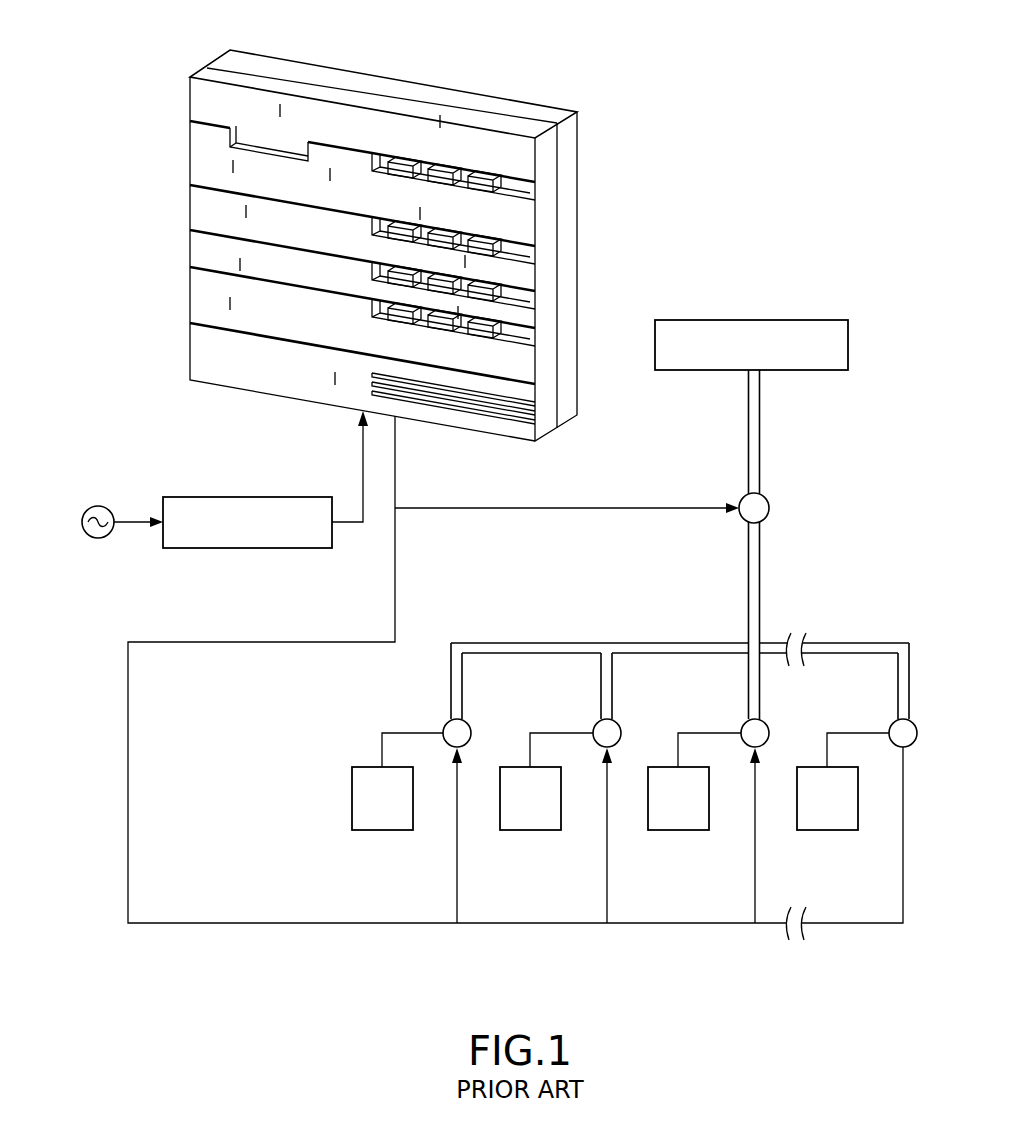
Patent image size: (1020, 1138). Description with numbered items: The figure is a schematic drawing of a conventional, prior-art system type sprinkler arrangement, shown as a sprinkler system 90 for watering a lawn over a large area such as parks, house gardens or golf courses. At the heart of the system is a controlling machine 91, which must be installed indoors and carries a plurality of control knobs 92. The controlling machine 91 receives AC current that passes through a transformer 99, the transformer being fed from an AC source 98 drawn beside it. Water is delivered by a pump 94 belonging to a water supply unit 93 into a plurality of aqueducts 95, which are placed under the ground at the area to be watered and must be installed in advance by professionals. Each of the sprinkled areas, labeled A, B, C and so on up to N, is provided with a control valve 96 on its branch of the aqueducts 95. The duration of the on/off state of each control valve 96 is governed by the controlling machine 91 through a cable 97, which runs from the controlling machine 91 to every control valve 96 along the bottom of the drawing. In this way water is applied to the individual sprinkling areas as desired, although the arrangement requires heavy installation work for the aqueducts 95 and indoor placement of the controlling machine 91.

The sprinkler system 90 is at (666, 76).
The controlling machine 91 is at (447, 93).
The control knobs 92 is at (503, 293).
The water supply unit 93 is at (782, 330).
The pump 94 is at (769, 506).
The aqueducts 95 is at (757, 583).
The control valve 96 is at (768, 728).
The cable 97 is at (273, 925).
The power source 98 is at (98, 539).
The transformer 99 is at (258, 549).